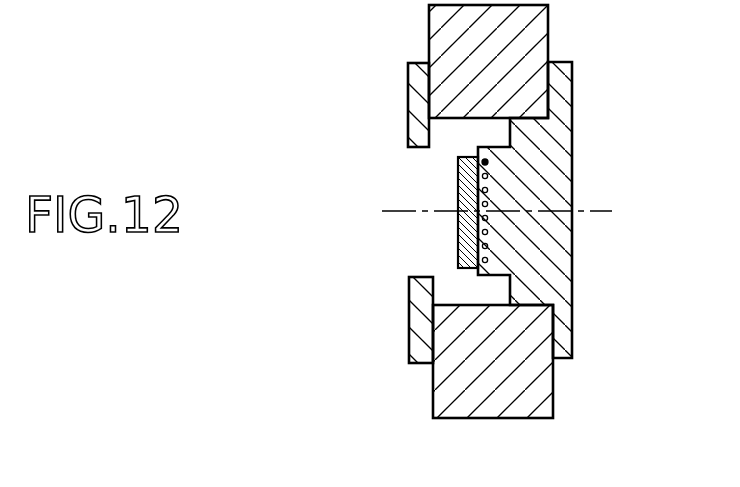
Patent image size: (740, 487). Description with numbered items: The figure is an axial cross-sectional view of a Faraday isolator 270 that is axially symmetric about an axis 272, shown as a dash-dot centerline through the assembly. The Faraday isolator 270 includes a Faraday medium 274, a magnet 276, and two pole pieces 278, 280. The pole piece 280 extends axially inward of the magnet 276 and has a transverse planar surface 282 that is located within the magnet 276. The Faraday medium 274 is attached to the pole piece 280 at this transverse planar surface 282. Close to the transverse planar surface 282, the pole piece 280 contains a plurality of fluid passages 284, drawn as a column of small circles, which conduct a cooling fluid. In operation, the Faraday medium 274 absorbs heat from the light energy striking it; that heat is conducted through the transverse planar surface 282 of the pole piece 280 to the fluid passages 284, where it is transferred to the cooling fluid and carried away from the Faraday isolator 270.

The Faraday isolator 270 is at (356, 106).
The axis 272 is at (406, 213).
The Faraday medium 274 is at (458, 196).
The magnet 276 is at (556, 400).
The pole piece 278 is at (411, 62).
The pole piece 280 is at (573, 96).
The transverse planar surface 282 is at (480, 240).
The fluid passages 284 is at (461, 164).